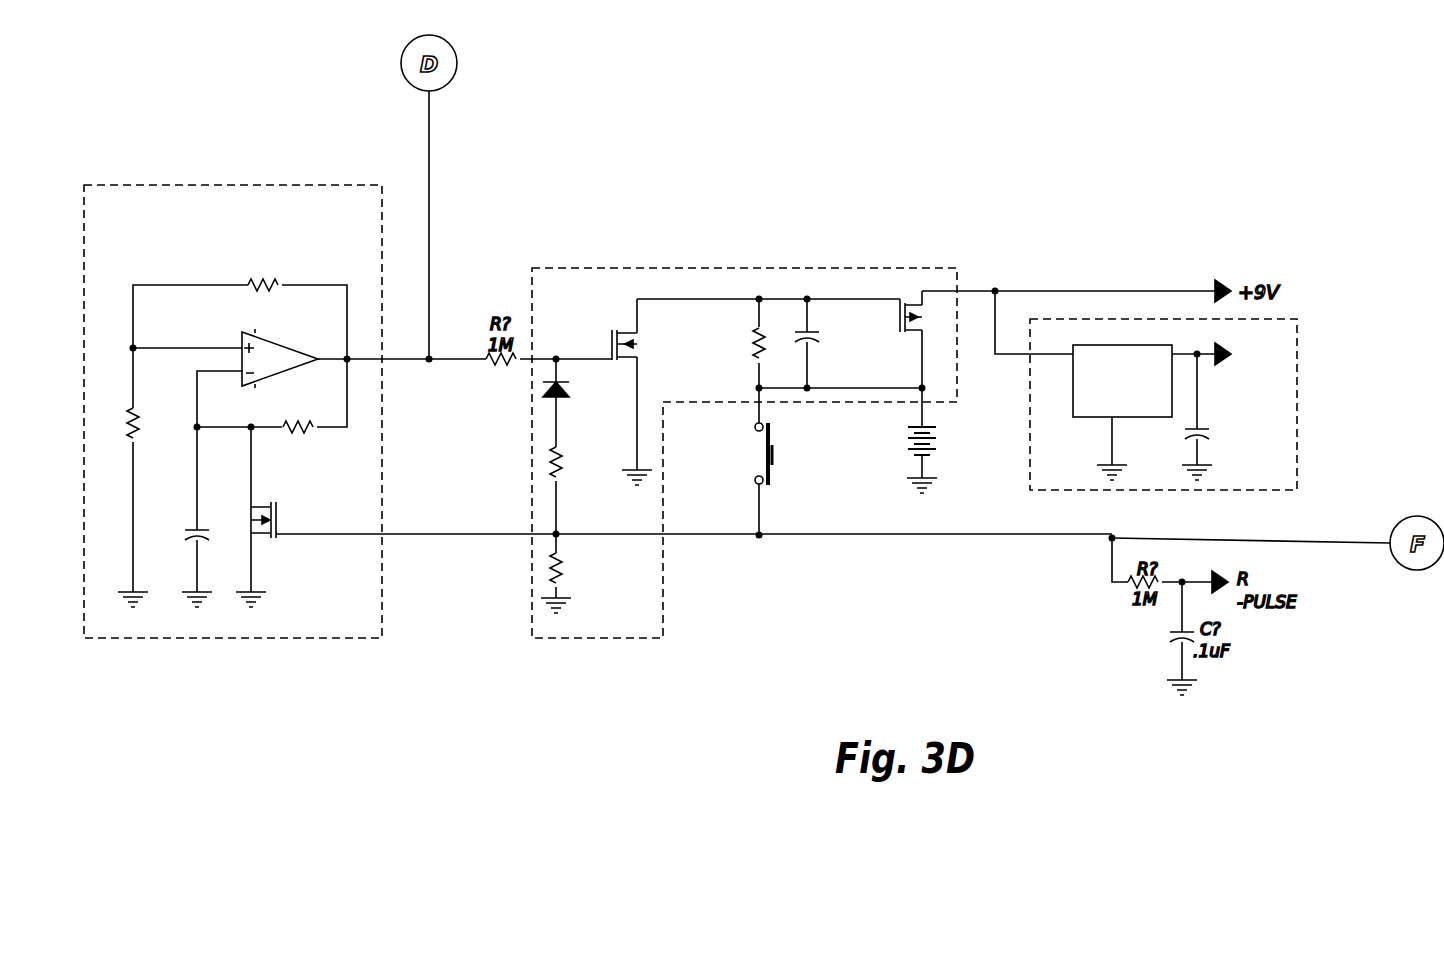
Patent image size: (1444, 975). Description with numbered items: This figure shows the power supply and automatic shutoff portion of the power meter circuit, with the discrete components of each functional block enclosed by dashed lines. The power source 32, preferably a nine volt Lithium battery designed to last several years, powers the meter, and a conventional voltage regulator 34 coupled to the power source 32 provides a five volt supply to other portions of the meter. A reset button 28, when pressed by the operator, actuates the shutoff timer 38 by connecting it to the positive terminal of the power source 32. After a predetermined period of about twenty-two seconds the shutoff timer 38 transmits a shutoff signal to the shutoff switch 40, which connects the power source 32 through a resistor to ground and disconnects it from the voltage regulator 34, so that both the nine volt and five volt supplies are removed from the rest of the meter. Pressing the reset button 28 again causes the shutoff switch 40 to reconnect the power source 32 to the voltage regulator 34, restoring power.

The reset button 28 is at (758, 497).
The power source 32 is at (912, 465).
The voltage regulator 34 is at (1277, 410).
The shutoff timer 38 is at (140, 193).
The shutoff switch 40 is at (702, 280).